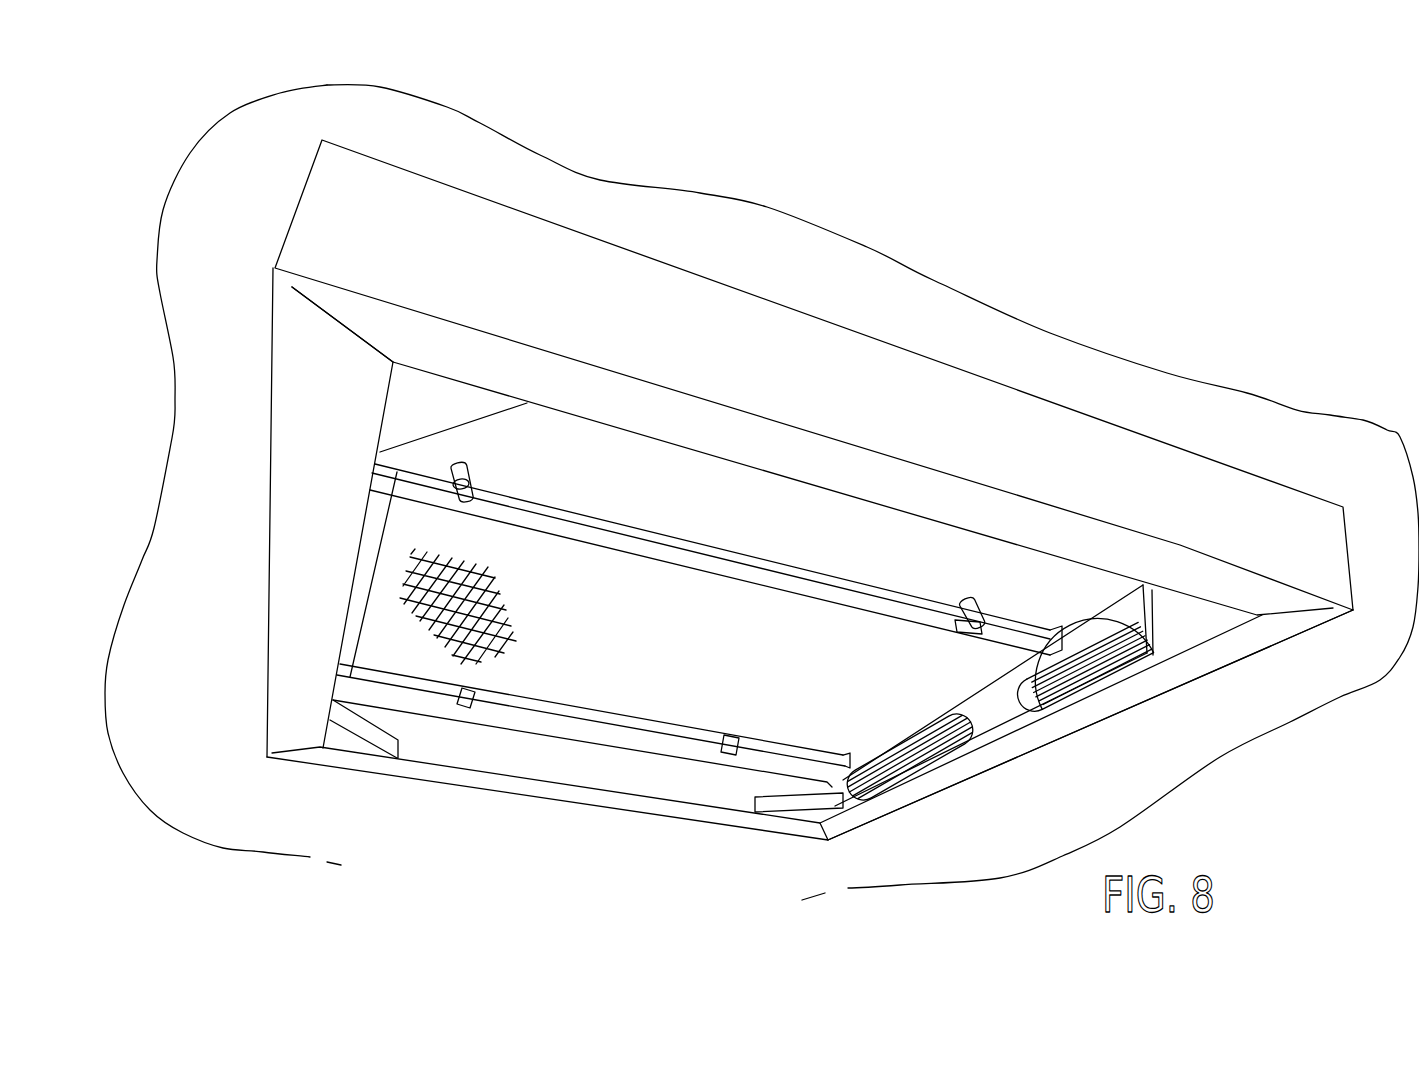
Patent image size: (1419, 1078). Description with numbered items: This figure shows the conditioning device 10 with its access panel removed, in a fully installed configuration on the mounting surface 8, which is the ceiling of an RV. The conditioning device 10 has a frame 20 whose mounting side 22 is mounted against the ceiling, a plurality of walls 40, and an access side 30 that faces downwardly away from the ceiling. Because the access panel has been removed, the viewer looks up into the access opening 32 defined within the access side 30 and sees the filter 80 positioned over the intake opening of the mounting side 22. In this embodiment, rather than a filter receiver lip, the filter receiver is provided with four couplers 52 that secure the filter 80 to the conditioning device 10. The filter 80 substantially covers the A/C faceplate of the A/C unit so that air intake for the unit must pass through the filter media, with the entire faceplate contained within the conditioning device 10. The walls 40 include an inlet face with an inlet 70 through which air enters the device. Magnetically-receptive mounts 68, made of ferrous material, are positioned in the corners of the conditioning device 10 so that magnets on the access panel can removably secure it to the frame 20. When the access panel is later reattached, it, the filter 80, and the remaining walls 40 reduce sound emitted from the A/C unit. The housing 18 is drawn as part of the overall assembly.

The mounting surface 8 is at (1328, 440).
The conditioning device 10 is at (203, 103).
The housing 18 is at (865, 323).
The frame 20 is at (255, 392).
The mounting side 22 is at (850, 557).
The access side 30 is at (1273, 627).
The access opening 32 is at (1012, 750).
The walls 40 is at (313, 232).
The coupler 52 is at (468, 478).
The magnetically-receptive mount 68 is at (1172, 630).
The inlet 70 is at (903, 773).
The filter 80 is at (643, 688).